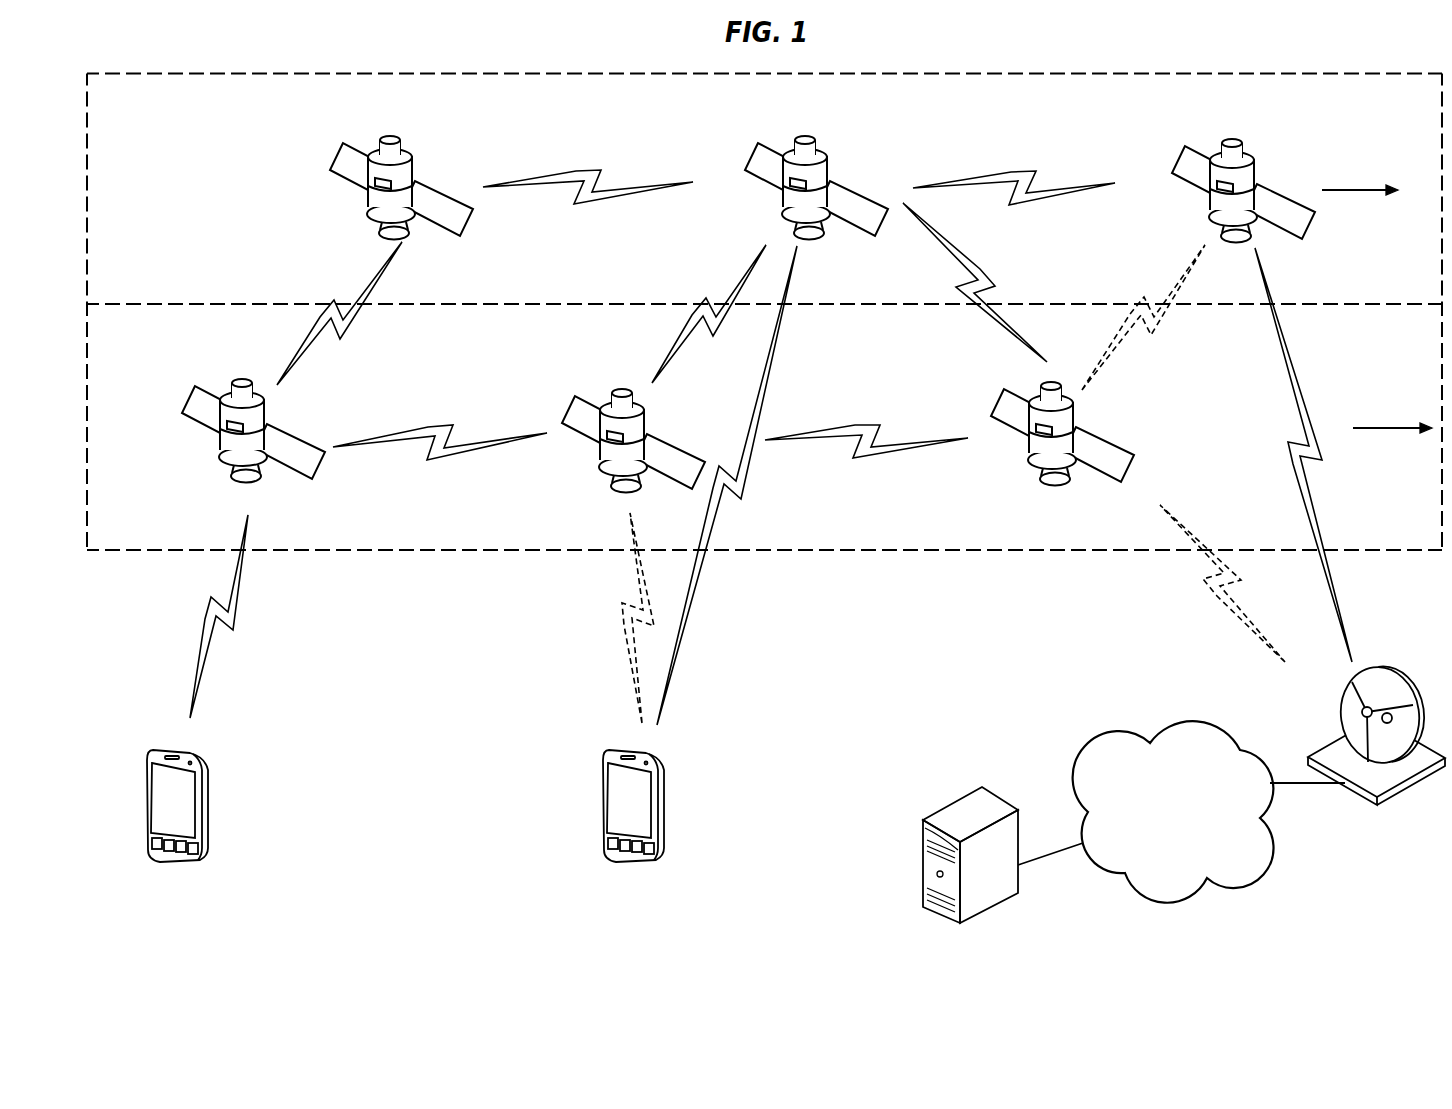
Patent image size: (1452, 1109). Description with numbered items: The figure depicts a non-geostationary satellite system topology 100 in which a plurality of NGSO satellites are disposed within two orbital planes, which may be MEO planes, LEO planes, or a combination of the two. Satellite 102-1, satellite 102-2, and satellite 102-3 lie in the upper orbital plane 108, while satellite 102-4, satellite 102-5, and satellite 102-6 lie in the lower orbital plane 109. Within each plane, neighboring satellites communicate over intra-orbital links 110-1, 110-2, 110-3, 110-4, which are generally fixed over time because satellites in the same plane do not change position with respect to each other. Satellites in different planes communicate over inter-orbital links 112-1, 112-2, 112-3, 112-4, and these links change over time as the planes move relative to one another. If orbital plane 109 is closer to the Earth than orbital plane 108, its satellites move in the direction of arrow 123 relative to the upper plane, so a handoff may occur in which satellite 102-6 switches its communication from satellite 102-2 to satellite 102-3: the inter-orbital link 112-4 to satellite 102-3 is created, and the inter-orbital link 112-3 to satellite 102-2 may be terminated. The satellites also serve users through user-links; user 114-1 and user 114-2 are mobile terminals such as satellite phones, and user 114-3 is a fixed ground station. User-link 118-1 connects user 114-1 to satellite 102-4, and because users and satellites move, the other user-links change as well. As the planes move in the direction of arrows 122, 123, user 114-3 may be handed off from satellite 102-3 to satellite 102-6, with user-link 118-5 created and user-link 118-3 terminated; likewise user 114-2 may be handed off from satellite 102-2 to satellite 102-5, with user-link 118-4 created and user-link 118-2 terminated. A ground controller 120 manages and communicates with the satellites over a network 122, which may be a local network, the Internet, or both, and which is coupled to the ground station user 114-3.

The NGSO satellite system topology 100 is at (983, 45).
The satellite 102-1 is at (403, 170).
The satellite 102-2 is at (822, 172).
The satellite 102-3 is at (1250, 172).
The satellite 102-4 is at (205, 413).
The satellite 102-5 is at (583, 412).
The satellite 102-6 is at (1090, 440).
The orbital plane 108 is at (764, 189).
The orbital plane 109 is at (764, 427).
The intra-orbital link 110-1 is at (580, 170).
The intra-orbital link 110-2 is at (1022, 172).
The intra-orbital link 110-3 is at (443, 424).
The intra-orbital link 110-4 is at (858, 428).
The inter-orbital link 112-1 is at (340, 332).
The inter-orbital link 112-2 is at (720, 332).
The inter-orbital link 112-3 is at (988, 288).
The inter-orbital link 112-4 is at (1158, 330).
The user 114-1 is at (210, 817).
The user 114-2 is at (668, 828).
The user 114-3 is at (1417, 783).
The user-link 118-1 is at (237, 626).
The user-link 118-2 is at (700, 578).
The user-link 118-3 is at (1322, 493).
The user-link 118-4 is at (623, 628).
The user-link 118-5 is at (1210, 605).
The ground controller 120 is at (1000, 892).
The network 122 is at (1357, 192).
The arrow 123 is at (1385, 428).